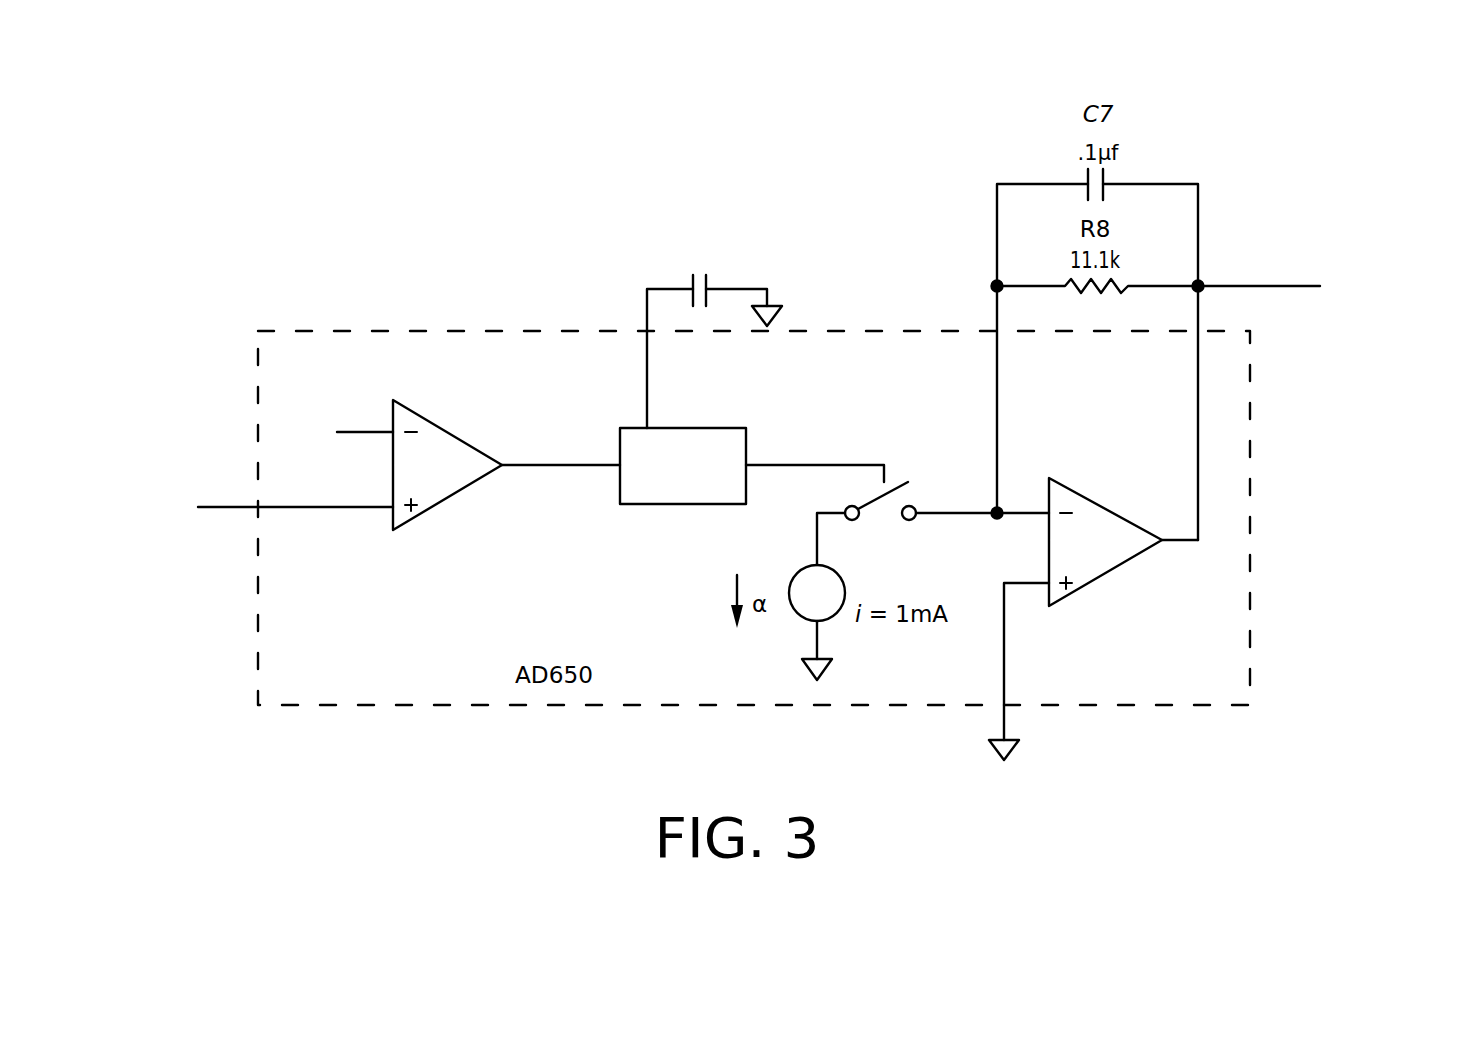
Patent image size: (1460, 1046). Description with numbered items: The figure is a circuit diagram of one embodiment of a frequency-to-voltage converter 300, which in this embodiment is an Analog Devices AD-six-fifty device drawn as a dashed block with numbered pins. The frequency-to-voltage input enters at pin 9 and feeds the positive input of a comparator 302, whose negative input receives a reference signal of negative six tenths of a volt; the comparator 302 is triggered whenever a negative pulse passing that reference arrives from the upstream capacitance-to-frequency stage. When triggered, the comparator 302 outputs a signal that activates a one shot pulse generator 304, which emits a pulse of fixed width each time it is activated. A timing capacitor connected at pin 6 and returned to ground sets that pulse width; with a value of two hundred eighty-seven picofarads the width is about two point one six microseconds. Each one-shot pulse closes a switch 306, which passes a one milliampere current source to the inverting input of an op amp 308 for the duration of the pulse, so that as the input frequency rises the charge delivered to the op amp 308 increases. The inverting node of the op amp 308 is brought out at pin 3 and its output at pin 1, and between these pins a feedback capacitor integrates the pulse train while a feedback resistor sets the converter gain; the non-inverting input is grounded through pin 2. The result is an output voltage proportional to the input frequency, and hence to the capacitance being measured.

The frequency-to-voltage converter 300 is at (280, 149).
The comparator 302 is at (465, 440).
The one shot pulse generator 304 is at (723, 428).
The switch 306 is at (907, 498).
The op amp 308 is at (1123, 517).
The pin 9 input 9 is at (235, 496).
The pin 6 is at (699, 316).
The pin 3 is at (1079, 362).
The pin 1 output 1 is at (1322, 299).
The pin 2 ground 2 is at (1019, 671).